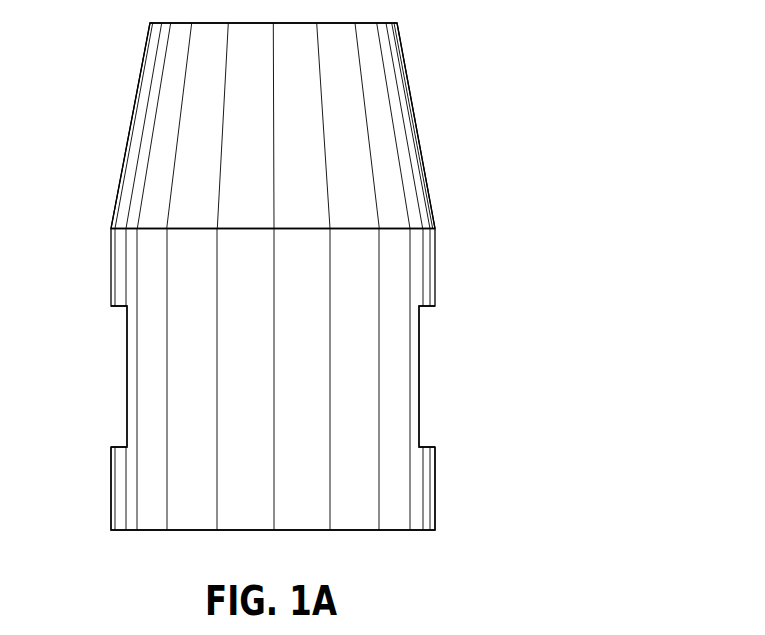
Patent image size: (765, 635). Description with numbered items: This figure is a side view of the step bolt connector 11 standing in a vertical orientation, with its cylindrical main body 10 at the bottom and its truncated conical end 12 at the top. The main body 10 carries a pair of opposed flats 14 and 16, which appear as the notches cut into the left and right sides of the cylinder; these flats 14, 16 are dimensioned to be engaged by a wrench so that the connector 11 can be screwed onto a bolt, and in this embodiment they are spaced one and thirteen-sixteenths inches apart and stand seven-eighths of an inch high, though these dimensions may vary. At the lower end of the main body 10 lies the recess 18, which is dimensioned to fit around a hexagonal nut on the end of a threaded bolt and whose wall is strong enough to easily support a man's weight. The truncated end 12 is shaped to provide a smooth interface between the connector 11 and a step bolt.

The cylindrical main body 10 is at (413, 262).
The step bolt connector 11 is at (365, 276).
The truncated conical end 12 is at (395, 118).
The flat 14 is at (420, 422).
The flat 16 is at (127, 373).
The recess 18 is at (436, 487).